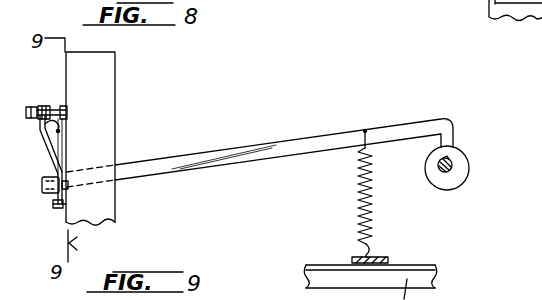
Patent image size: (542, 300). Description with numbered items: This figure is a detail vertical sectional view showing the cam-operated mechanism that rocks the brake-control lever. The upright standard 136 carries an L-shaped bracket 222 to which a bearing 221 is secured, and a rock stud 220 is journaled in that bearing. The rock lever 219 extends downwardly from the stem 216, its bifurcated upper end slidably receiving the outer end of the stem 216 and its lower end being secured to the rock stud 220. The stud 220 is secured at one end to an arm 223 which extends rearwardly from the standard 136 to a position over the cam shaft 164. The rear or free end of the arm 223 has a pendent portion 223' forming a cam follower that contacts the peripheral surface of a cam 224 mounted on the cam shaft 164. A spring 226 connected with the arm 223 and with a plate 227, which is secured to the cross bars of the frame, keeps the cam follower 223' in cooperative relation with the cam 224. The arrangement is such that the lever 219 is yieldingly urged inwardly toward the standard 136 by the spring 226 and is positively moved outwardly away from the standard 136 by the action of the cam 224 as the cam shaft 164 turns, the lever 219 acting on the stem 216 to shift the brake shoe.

The standard 136 is at (108, 99).
The stem 216 is at (51, 108).
The rock lever 219 is at (43, 141).
The rock stud 220 is at (42, 185).
The bearing 221 is at (53, 207).
The L-shaped bracket 222 is at (44, 128).
The arm 223 is at (284, 159).
The pendent portion 223' is at (479, 131).
The cam 224 is at (445, 187).
The cam shaft 164 is at (452, 170).
The spring 226 is at (366, 186).
The plate 227 is at (389, 261).